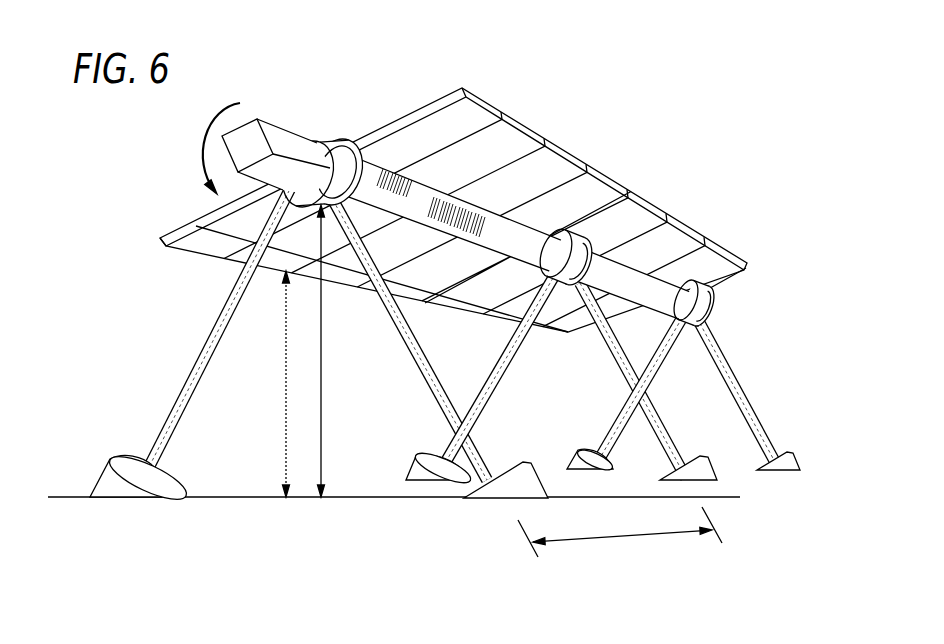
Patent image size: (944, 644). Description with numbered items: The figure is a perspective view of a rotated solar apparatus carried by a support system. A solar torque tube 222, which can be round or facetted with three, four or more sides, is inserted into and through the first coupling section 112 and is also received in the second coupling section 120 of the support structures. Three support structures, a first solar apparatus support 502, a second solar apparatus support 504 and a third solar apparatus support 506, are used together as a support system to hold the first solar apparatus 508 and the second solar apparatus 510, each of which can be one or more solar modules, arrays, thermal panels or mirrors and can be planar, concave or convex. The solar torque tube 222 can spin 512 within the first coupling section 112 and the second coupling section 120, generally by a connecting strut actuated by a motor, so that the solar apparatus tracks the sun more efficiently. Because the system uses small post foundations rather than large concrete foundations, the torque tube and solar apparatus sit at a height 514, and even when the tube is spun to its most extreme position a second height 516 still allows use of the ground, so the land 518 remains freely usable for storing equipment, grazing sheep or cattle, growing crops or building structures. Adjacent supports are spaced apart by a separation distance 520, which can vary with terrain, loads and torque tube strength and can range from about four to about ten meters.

The first coupling section 112 is at (327, 143).
The second coupling section 120 is at (355, 143).
The solar torque tube 222 is at (279, 142).
The first solar apparatus support 502 is at (215, 338).
The second solar apparatus support 504 is at (502, 370).
The third solar apparatus support 506 is at (658, 357).
The first solar apparatus 508 is at (626, 183).
The second solar apparatus 510 is at (750, 259).
The spin 512 is at (203, 146).
The height 514 is at (322, 358).
The second height 516 is at (286, 406).
The land 518 is at (645, 481).
The separation distance 520 is at (623, 538).